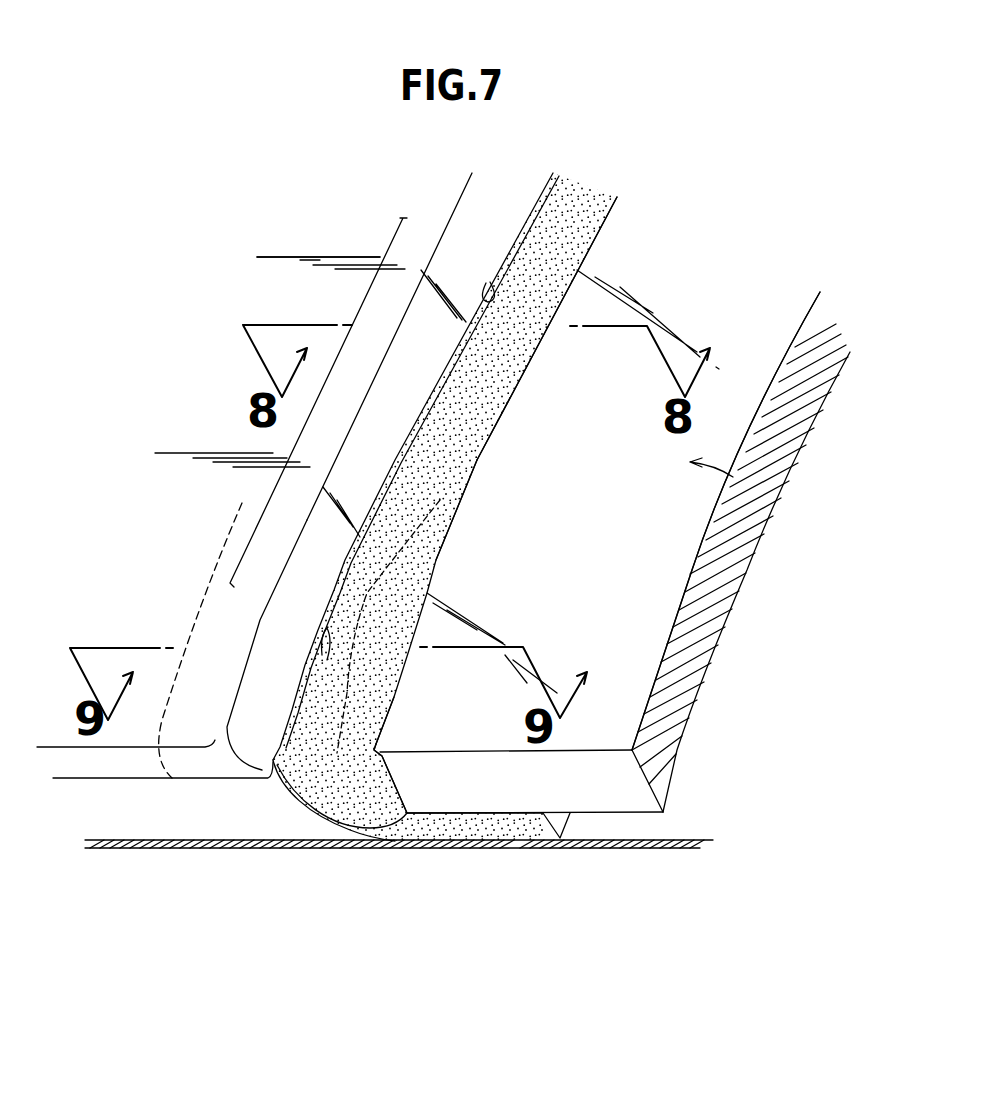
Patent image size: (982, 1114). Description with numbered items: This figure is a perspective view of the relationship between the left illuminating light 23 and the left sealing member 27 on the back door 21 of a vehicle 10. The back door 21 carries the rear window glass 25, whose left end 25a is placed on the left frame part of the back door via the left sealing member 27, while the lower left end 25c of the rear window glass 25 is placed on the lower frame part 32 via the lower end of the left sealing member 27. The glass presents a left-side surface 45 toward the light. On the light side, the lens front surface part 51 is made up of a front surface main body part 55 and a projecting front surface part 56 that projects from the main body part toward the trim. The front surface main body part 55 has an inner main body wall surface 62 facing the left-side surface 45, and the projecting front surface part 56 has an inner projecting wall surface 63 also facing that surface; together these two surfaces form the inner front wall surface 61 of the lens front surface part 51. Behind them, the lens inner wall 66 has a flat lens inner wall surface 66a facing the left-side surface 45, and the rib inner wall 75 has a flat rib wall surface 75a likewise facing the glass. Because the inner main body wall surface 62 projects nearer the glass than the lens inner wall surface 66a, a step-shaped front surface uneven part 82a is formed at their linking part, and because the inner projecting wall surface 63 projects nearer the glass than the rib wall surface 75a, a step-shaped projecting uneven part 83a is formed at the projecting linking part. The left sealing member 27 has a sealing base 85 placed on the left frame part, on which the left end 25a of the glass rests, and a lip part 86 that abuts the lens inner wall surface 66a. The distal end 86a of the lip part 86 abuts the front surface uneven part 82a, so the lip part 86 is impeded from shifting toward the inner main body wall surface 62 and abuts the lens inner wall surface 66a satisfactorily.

The vehicle 10 is at (194, 84).
The back door 21 is at (199, 836).
The left illuminating light 23 is at (185, 332).
The rear window glass 25 is at (770, 490).
The left end of the rear window glass 25a is at (493, 455).
The lower left end of the rear window glass 25c is at (493, 733).
The left sealing member 27 is at (477, 925).
The lower frame part 32 is at (632, 823).
The left-side surface 45 is at (445, 492).
The lens front surface part 51 is at (175, 432).
The front surface main body part 55 is at (303, 220).
The projecting front surface part 56 is at (130, 610).
The inner front wall surface 61 is at (365, 296).
The inner main body wall surface 62 is at (425, 322).
The inner projecting wall surface 63 is at (277, 643).
The lens inner wall 66 is at (556, 276).
The lens inner wall surface 66a is at (475, 402).
The rib inner wall 75 is at (344, 737).
The rib wall surface 75a is at (337, 692).
The front surface uneven part 82a is at (490, 290).
The projecting uneven part 83a is at (327, 660).
The sealing base 85 is at (473, 823).
The lip part 86 is at (337, 817).
The distal end of the lip part 86a is at (421, 456).